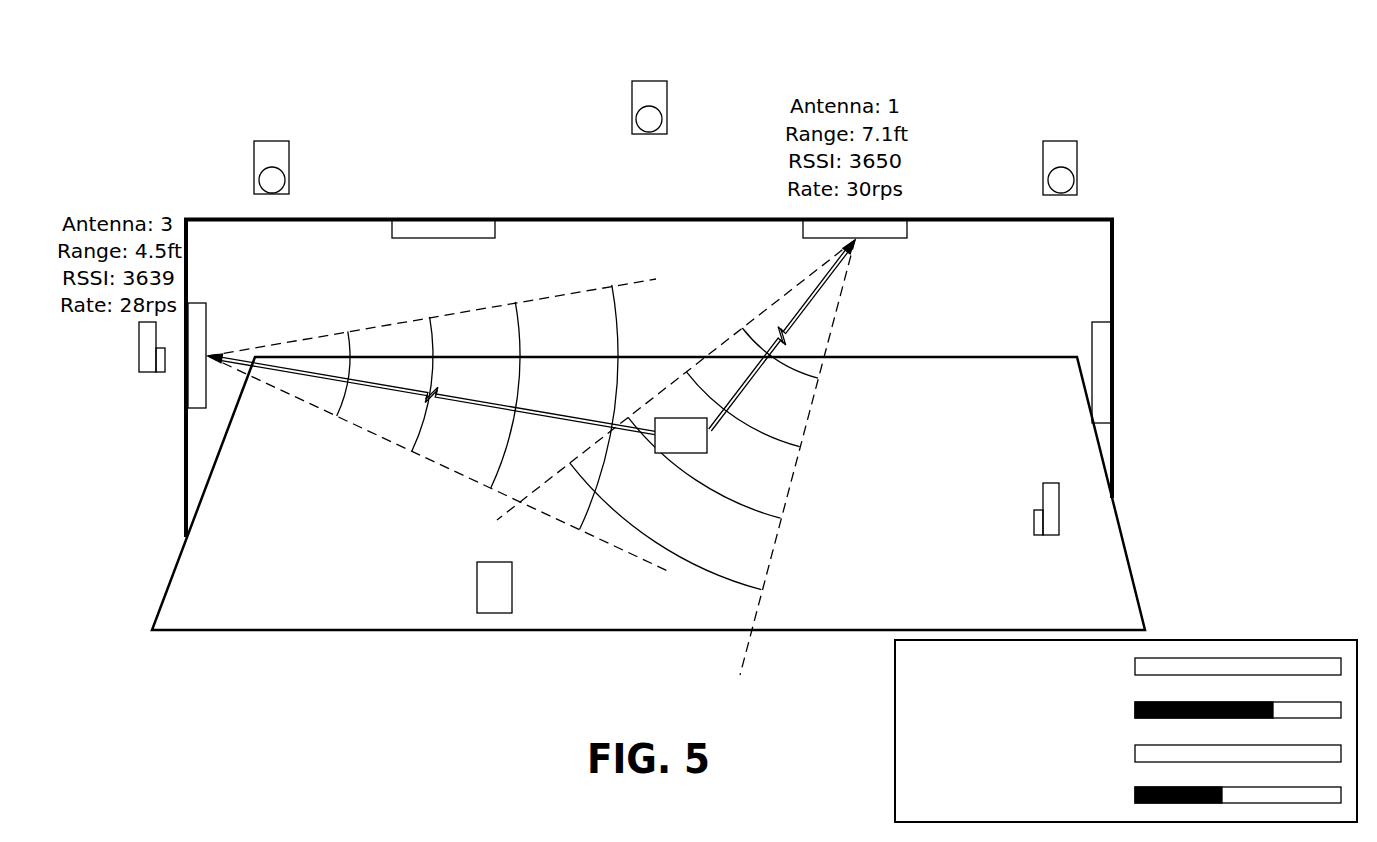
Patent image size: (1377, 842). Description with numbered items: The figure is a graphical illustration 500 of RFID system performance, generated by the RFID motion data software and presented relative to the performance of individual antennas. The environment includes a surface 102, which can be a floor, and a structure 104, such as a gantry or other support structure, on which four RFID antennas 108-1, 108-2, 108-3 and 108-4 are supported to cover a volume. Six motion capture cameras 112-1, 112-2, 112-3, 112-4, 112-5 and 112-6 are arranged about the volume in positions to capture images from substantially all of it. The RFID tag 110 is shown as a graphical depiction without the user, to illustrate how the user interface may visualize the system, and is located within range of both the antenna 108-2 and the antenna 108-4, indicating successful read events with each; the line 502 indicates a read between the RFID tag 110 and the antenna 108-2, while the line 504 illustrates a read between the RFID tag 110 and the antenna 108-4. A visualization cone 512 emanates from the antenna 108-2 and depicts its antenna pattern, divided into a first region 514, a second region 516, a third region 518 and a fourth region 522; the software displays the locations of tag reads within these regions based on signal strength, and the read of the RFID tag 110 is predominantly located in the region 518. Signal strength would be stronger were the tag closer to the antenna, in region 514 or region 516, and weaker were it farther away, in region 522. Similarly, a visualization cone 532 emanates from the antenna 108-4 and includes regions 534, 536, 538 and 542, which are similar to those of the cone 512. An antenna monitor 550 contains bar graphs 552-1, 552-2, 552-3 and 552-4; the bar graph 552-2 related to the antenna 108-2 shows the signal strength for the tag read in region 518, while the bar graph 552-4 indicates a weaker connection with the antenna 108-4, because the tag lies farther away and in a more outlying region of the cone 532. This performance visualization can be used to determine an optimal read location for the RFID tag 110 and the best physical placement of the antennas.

The graphical illustration 500 is at (133, 27).
The surface 102 is at (237, 620).
The structure 104 is at (184, 448).
The RFID antenna 108-1 is at (1102, 321).
The RFID antenna 108-2 is at (907, 230).
The RFID antenna 108-3 is at (393, 229).
The RFID antenna 108-4 is at (200, 303).
The RFID tag 110 is at (707, 440).
The camera 112-1 is at (477, 580).
The camera 112-2 is at (138, 345).
The camera 112-3 is at (271, 141).
The camera 112-4 is at (649, 81).
The camera 112-5 is at (1060, 141).
The camera 112-6 is at (1060, 510).
The line 502 is at (805, 306).
The line 504 is at (445, 396).
The visualization cone 512 is at (843, 285).
The first region 514 is at (825, 325).
The second region 516 is at (797, 408).
The third region 518 is at (778, 473).
The fourth region 522 is at (766, 549).
The visualization cone 532 is at (310, 338).
The region 534 is at (295, 388).
The region 536 is at (375, 420).
The region 538 is at (450, 453).
The region 542 is at (552, 505).
The antenna monitor 550 is at (940, 666).
The bar graph 552-1 is at (968, 666).
The bar graph 552-2 is at (968, 709).
The bar graph 552-3 is at (968, 752).
The bar graph 552-4 is at (968, 795).